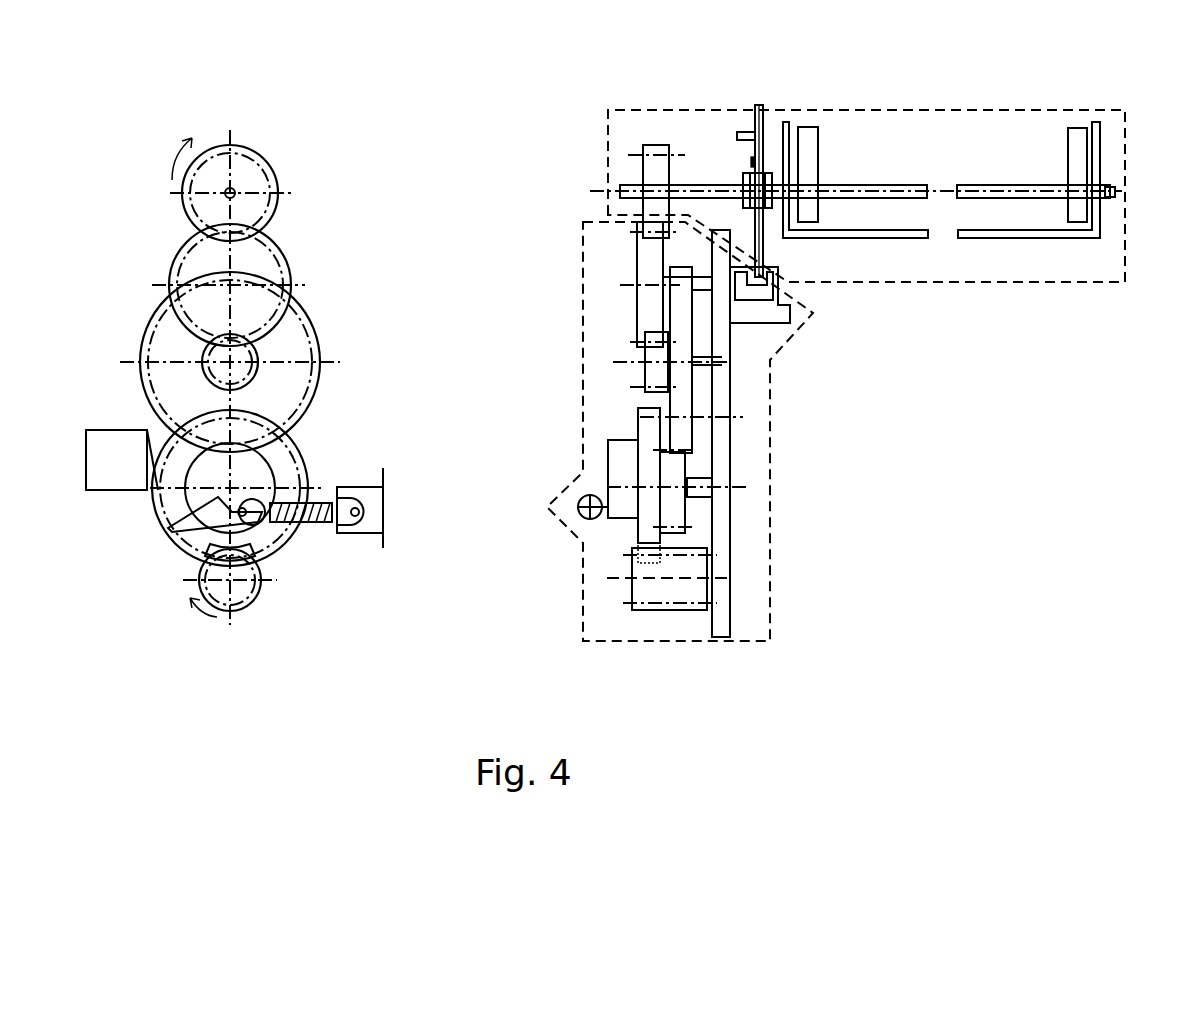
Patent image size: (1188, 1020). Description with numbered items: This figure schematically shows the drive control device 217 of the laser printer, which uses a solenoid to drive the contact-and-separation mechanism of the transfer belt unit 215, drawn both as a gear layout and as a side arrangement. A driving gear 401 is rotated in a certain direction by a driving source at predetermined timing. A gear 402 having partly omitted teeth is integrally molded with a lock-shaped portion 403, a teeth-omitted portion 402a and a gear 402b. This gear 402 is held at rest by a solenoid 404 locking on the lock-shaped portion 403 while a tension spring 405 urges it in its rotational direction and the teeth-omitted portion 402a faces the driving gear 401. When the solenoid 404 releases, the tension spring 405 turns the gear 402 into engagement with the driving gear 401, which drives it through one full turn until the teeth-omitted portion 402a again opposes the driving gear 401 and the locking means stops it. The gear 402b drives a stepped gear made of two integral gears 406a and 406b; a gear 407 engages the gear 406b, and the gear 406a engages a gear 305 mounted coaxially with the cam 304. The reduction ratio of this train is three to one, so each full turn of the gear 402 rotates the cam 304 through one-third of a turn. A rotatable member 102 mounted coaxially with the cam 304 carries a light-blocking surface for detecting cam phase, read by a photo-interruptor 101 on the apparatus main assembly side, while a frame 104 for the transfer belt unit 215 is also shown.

The gear 305 is at (258, 205).
The gear 407 is at (262, 266).
The gear of stepped gear 406b is at (241, 355).
The gear of stepped gear 406a is at (278, 393).
The solenoid 404 is at (123, 438).
The gear having partly omitted teeth 402 is at (283, 463).
The lock-shaped portion 403 is at (195, 497).
The teeth-omitted portion 402a is at (190, 552).
The tension spring 405 is at (317, 523).
The driving gear 401 is at (253, 600).
The rotatable member 102 is at (747, 123).
The cam 304 is at (812, 143).
The photo-interruptor 101 is at (762, 297).
The transfer belt unit 215 is at (843, 287).
The frame 104 is at (977, 237).
The drive control device 217 is at (770, 423).
The gear 402b is at (675, 517).